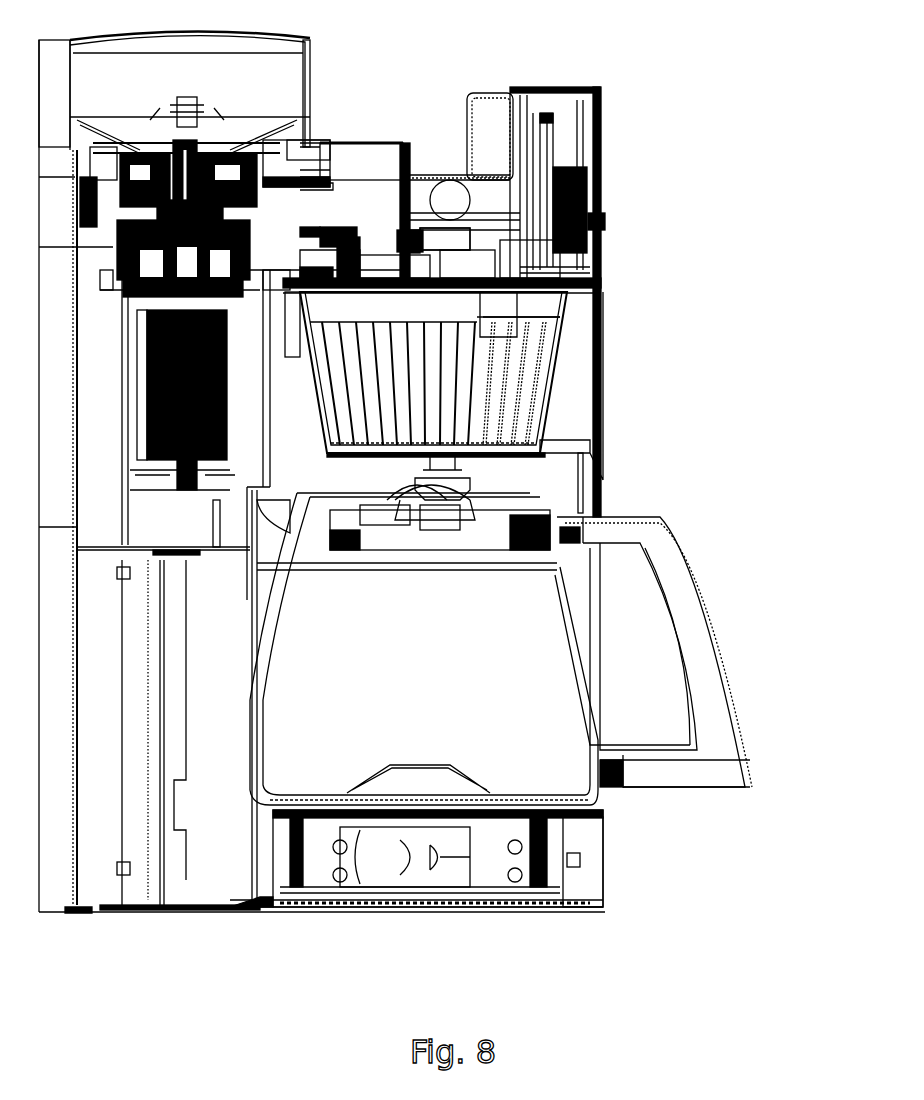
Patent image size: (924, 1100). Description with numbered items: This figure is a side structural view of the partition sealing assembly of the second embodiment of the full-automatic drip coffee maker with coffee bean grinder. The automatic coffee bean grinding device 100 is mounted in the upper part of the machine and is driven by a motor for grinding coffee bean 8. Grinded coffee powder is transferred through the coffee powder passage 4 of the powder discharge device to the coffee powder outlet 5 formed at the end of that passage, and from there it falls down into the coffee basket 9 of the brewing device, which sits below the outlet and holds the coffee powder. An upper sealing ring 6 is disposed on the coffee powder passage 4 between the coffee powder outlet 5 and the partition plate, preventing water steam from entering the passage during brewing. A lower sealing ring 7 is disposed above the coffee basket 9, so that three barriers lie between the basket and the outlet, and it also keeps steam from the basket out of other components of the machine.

The automatic coffee bean grinding device 100 is at (262, 92).
The coffee powder passage 4 is at (343, 227).
The coffee powder outlet 5 is at (425, 237).
The upper sealing ring 6 is at (600, 292).
The lower sealing ring 7 is at (450, 288).
The coffee basket 9 is at (413, 342).
The motor for grinding coffee bean 8 is at (440, 455).